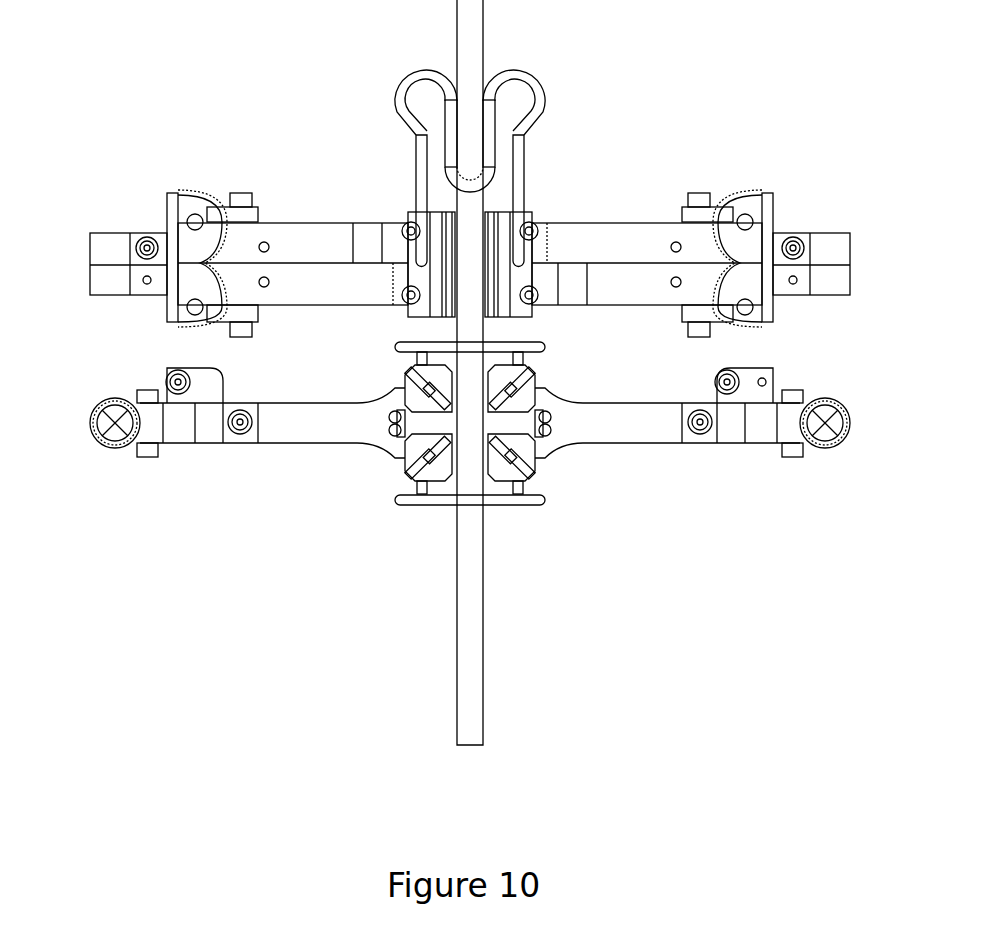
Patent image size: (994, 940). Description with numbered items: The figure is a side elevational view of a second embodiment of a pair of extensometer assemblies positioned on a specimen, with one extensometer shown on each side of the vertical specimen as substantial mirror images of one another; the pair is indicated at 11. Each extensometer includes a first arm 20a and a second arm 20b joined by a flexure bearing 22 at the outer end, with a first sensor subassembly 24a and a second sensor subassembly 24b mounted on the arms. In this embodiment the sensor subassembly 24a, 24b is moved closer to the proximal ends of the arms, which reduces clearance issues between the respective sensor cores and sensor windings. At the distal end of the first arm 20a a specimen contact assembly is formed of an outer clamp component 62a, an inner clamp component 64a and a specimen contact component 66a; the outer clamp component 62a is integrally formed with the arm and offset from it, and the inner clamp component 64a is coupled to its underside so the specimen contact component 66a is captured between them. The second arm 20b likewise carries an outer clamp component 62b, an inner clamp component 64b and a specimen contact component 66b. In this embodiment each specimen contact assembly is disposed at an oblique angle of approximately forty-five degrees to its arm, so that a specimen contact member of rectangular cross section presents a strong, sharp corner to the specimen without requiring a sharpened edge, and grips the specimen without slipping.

The upper clamp arm assembly 11 is at (77, 263).
The first arm 20a is at (599, 403).
The second arm 20b is at (562, 449).
The flexure bearing 22 is at (837, 418).
The first sensor subassembly 24a is at (779, 372).
The second sensor subassembly 24b is at (768, 383).
The outer clamp component 62a is at (506, 376).
The outer clamp component 62b is at (516, 462).
The inner clamp component 64a is at (500, 402).
The inner clamp component 64b is at (512, 456).
The specimen contact component 66a is at (513, 390).
The specimen contact component 66b is at (495, 464).